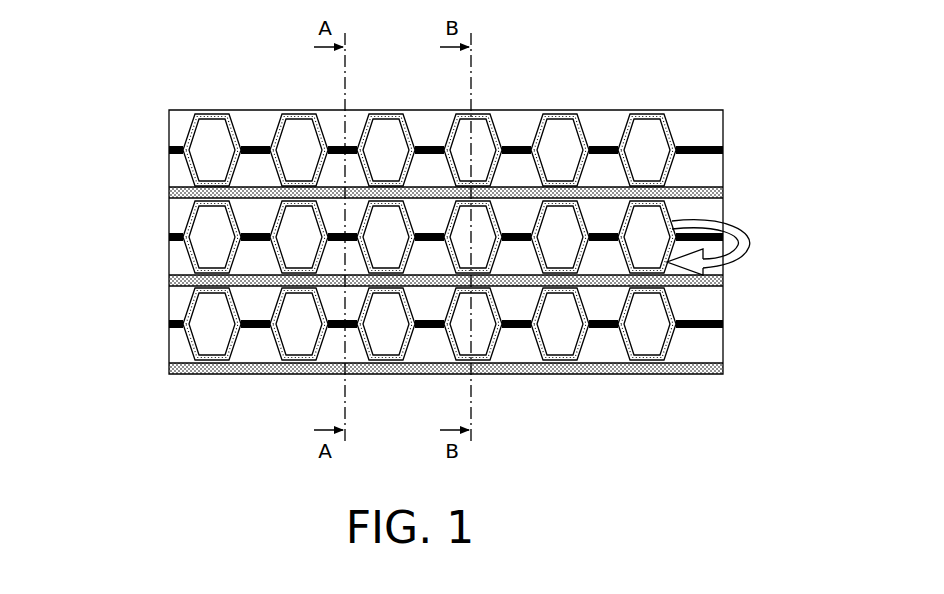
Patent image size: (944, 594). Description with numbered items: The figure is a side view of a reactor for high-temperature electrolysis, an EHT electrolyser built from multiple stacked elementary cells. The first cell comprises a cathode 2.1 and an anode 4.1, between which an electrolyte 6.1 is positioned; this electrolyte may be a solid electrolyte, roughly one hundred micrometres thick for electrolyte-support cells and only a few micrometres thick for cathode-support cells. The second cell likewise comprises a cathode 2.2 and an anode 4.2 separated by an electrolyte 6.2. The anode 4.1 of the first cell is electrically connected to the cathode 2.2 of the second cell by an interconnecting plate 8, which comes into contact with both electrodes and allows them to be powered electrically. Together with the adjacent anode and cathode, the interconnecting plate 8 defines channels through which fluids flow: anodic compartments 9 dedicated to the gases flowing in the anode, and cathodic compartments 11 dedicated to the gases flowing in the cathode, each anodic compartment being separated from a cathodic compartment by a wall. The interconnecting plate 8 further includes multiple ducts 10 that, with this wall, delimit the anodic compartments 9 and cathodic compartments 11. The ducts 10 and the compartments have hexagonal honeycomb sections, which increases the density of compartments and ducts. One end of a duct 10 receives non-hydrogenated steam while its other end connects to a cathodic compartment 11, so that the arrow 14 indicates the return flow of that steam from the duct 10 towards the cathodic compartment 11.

The cathode 2.1 is at (513, 127).
The cathode 2.2 is at (261, 277).
The anode 4.1 is at (268, 199).
The anode 4.2 is at (435, 287).
The electrolyte 6.1 is at (180, 192).
The electrolyte 6.2 is at (172, 280).
The interconnecting plate 8 is at (590, 255).
The anodic compartment 9 is at (527, 127).
The duct 10 is at (395, 230).
The cathodic compartment 11 is at (593, 172).
The arrow 14 is at (741, 253).
The EHT electrolyser EHT is at (746, 123).